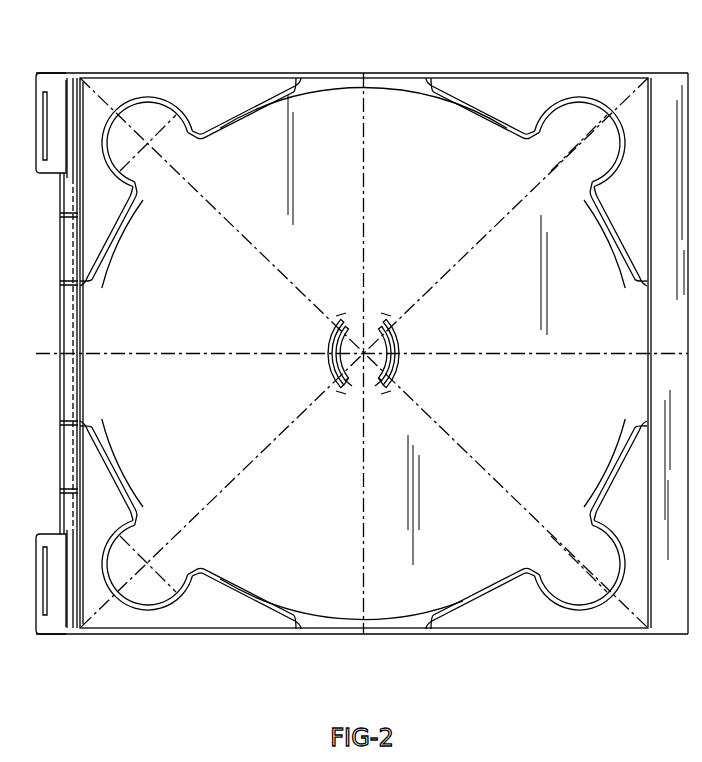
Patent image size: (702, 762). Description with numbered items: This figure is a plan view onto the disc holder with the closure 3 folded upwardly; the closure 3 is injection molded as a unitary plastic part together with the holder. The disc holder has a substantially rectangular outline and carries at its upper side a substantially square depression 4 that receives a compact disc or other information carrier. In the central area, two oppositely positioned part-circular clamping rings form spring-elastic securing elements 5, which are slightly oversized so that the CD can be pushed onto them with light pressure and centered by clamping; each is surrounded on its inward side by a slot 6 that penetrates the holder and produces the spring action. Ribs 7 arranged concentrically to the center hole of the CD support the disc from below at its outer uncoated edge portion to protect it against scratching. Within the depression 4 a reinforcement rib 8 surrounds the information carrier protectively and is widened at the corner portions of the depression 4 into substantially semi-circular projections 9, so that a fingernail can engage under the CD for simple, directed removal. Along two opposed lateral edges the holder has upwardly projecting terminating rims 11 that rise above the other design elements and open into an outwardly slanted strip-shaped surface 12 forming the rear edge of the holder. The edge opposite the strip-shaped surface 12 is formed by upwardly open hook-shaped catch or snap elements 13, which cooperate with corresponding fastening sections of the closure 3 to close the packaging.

The closure 3 is at (69, 295).
The depression 4 is at (330, 577).
The securing elements 5 is at (332, 365).
The slot 6 is at (385, 380).
The ribs 7 is at (476, 114).
The reinforcement rib 8 is at (152, 98).
The semi-circular projections 9 is at (585, 115).
The terminating rims 11 is at (246, 78).
The strip-shaped surface 12 is at (672, 87).
The catch or snap elements 13 is at (65, 82).